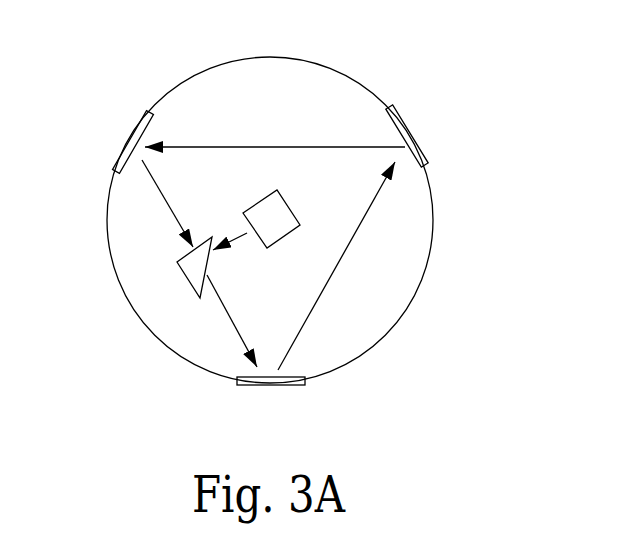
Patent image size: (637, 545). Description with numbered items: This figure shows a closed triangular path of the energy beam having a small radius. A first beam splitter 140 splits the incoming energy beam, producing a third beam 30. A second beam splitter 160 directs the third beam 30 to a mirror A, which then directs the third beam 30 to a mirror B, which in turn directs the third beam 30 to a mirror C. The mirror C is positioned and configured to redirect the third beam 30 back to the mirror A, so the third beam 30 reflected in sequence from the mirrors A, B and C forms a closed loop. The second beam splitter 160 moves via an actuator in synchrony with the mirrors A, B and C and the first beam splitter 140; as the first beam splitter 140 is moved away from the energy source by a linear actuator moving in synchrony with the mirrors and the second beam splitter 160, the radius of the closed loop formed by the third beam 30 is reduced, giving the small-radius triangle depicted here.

The first beam splitter 140 is at (257, 197).
The second beam splitter 160 is at (178, 264).
The third beam 30 is at (220, 248).
The mirror A is at (408, 128).
The mirror B is at (133, 133).
The mirror C is at (270, 386).